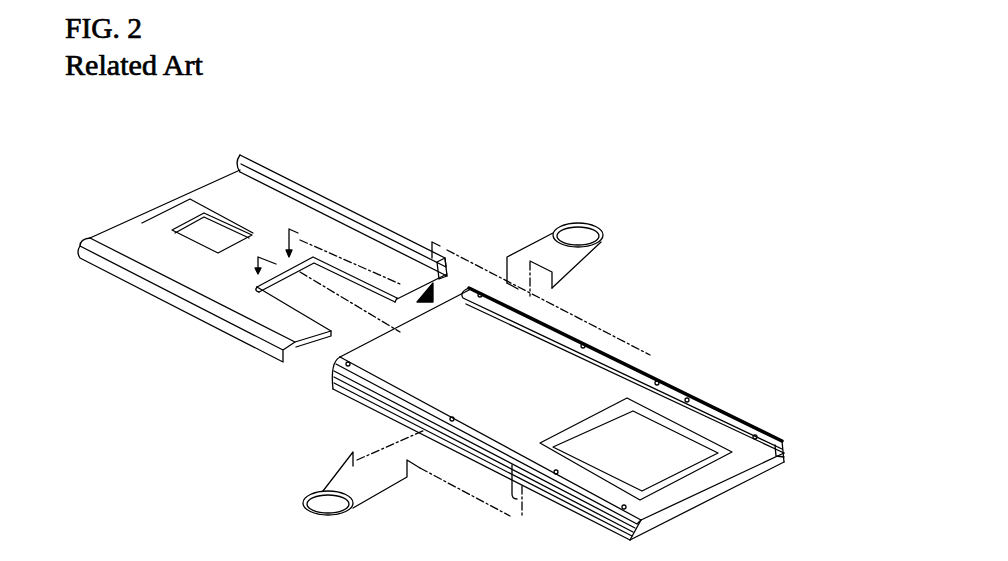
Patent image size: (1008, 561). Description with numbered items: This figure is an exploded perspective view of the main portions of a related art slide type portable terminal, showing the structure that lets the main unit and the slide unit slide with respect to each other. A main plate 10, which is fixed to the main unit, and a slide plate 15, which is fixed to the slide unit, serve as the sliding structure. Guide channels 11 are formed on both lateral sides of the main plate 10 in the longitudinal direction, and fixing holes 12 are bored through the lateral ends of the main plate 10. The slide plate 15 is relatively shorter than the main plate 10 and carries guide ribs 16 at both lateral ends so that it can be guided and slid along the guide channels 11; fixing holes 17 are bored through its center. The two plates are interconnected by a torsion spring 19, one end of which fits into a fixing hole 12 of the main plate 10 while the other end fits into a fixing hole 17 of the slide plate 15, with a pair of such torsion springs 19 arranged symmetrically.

The main plate 10 is at (737, 397).
The guide channels 11 is at (453, 452).
The fixing holes 12 is at (657, 385).
The slide plate 15 is at (315, 178).
The guide ribs 16 is at (291, 363).
The fixing holes 17 is at (300, 252).
The torsion spring 19 is at (596, 228).